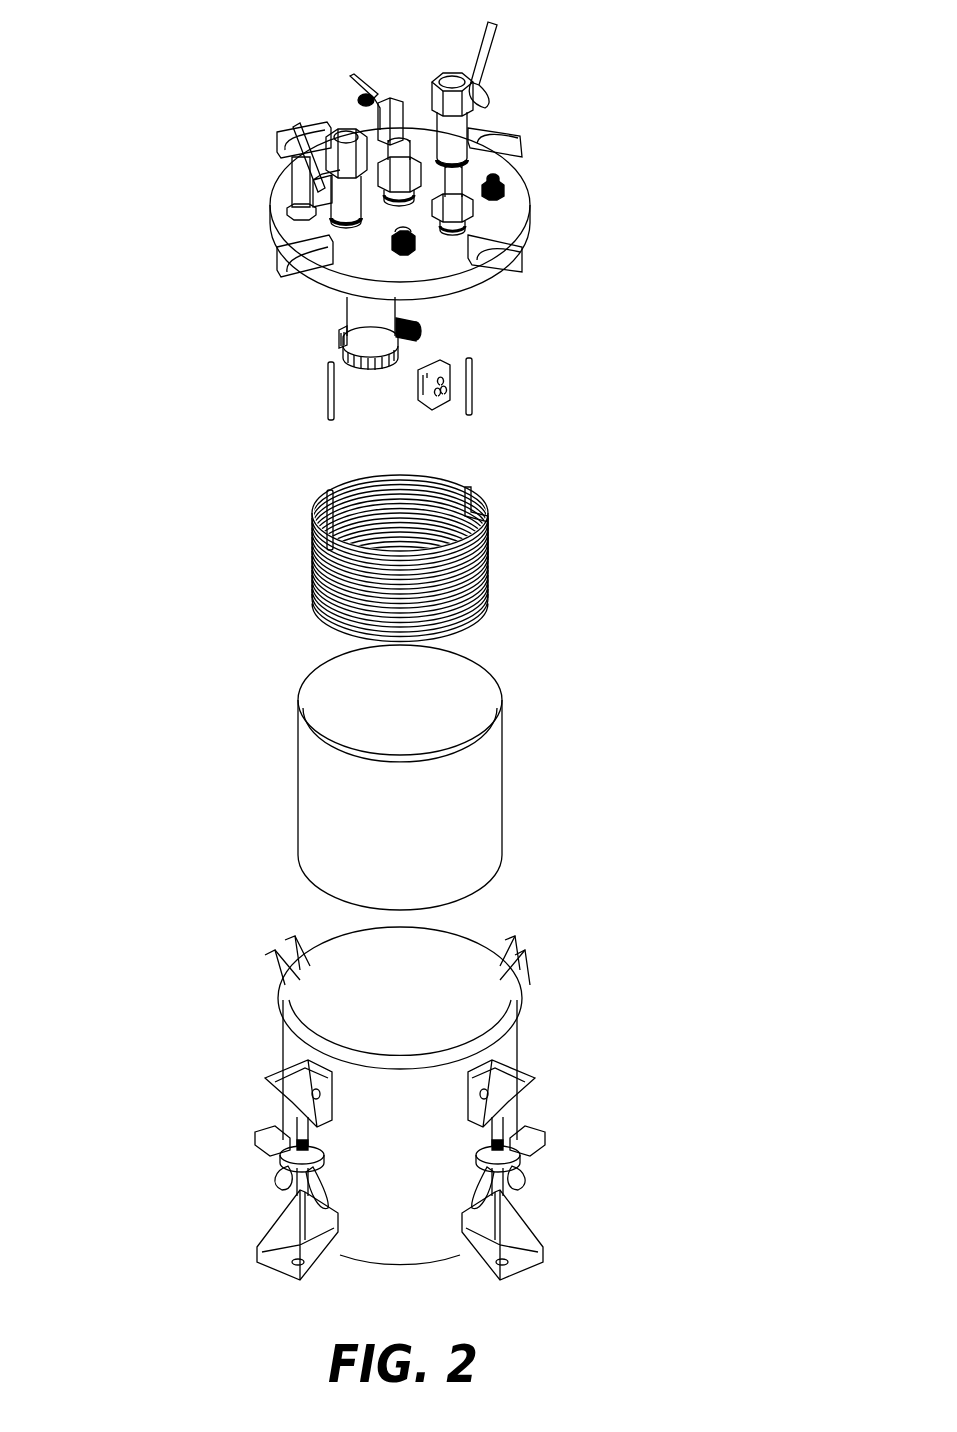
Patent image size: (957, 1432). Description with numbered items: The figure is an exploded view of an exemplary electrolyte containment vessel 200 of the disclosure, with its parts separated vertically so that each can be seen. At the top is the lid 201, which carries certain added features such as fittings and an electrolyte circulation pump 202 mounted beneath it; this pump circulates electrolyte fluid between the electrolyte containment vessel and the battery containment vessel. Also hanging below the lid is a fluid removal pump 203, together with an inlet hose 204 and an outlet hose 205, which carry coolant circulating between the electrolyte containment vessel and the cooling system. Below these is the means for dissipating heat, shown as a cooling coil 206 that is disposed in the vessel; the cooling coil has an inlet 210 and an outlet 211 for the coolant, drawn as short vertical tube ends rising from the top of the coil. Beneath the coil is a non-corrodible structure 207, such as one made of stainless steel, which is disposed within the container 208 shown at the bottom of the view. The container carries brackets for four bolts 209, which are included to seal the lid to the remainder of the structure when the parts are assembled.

The electrolyte containment vessel 200 is at (146, 118).
The lid 201 is at (523, 178).
The electrolyte circulation pump 202 is at (440, 306).
The fluid removal pump 203 is at (437, 405).
The inlet hose 204 is at (473, 388).
The outlet hose 205 is at (326, 416).
The cooling coil 206 is at (490, 544).
The non-corrodible structure 207 is at (503, 753).
The container 208 is at (520, 1001).
The bolts 209 is at (525, 1178).
The inlet 210 is at (480, 492).
The outlet 211 is at (330, 492).